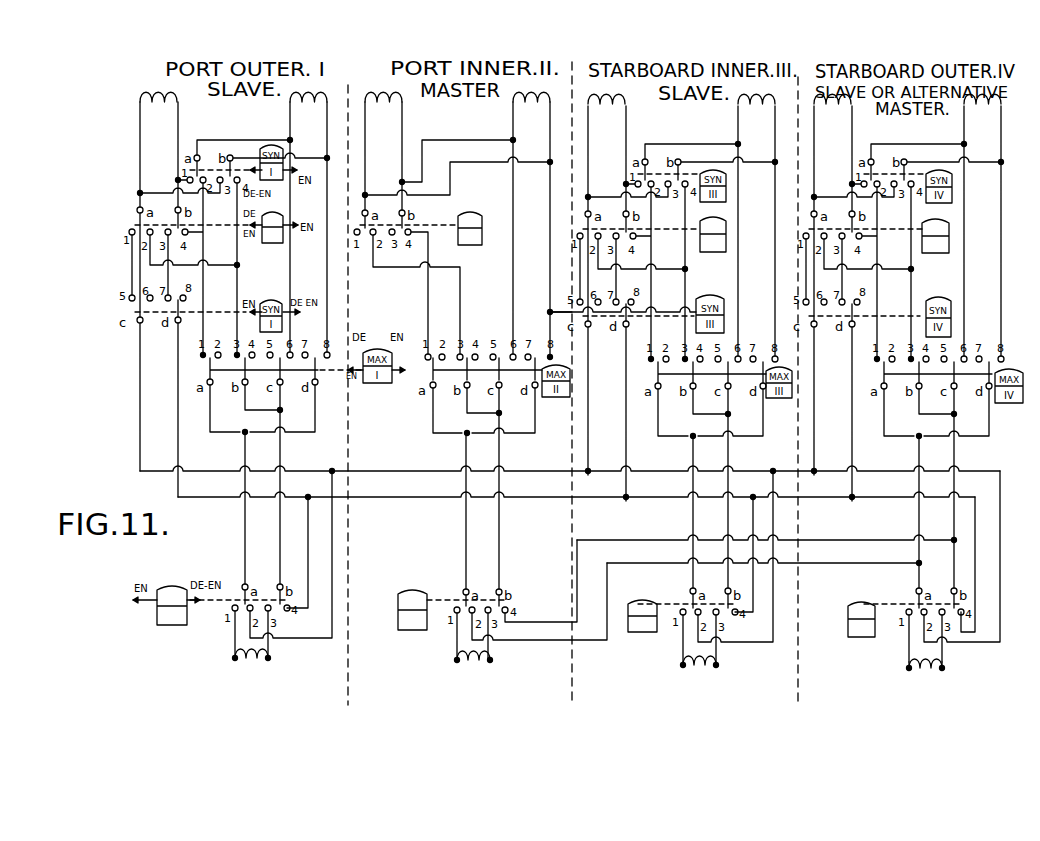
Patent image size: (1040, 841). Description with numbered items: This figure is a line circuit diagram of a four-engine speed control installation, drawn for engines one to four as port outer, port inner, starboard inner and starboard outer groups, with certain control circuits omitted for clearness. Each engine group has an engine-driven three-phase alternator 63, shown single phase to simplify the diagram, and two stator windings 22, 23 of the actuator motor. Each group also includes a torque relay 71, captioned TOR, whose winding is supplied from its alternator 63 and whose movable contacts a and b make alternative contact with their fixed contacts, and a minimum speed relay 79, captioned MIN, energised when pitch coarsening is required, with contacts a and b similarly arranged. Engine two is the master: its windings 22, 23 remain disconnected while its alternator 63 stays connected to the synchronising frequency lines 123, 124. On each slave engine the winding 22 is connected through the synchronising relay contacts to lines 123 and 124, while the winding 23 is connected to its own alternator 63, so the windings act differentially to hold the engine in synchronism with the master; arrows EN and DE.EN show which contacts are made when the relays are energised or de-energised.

The stator winding of the actuator motor 22 is at (860, 128).
The stator winding of the actuator motor 23 is at (966, 108).
The minimum speed relay 79 is at (940, 254).
The torque relay 71 is at (170, 583).
The three-phase alternator 63 is at (270, 662).
The synchronising frequency circuit line 123 is at (418, 472).
The synchronising frequency circuit line 124 is at (420, 500).